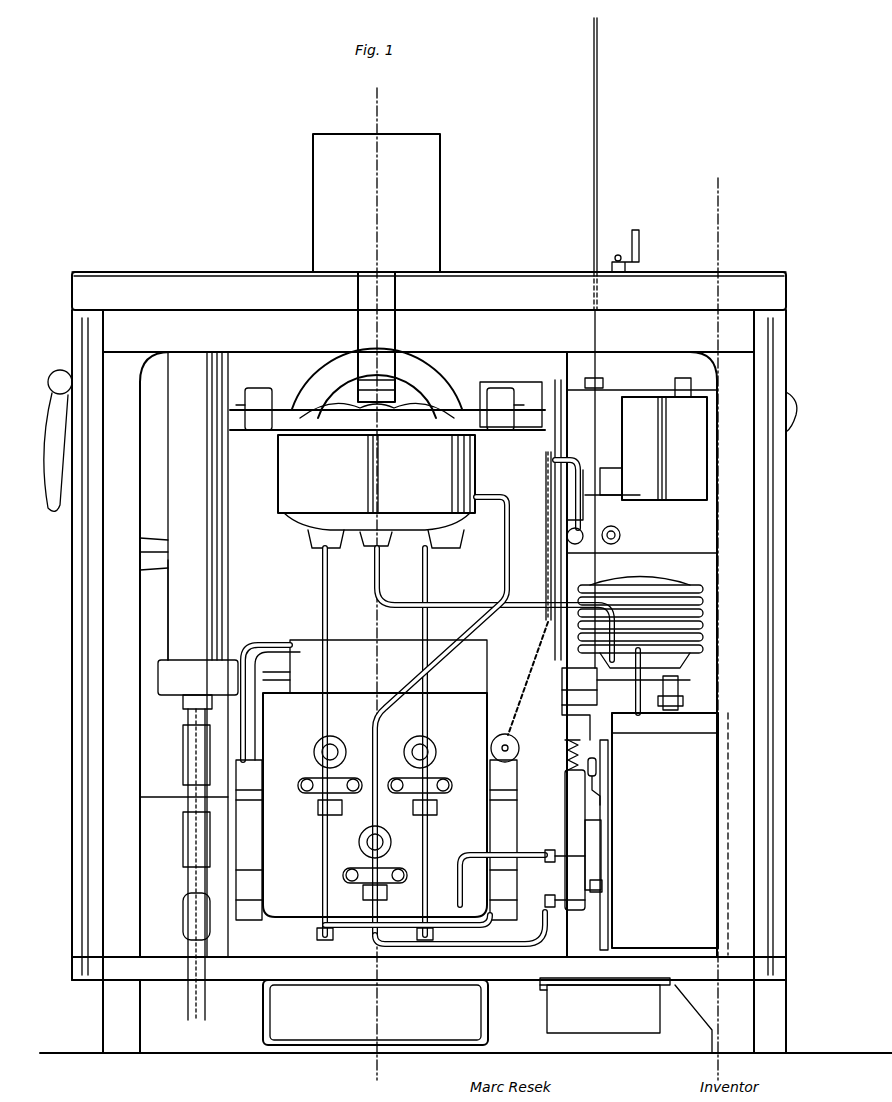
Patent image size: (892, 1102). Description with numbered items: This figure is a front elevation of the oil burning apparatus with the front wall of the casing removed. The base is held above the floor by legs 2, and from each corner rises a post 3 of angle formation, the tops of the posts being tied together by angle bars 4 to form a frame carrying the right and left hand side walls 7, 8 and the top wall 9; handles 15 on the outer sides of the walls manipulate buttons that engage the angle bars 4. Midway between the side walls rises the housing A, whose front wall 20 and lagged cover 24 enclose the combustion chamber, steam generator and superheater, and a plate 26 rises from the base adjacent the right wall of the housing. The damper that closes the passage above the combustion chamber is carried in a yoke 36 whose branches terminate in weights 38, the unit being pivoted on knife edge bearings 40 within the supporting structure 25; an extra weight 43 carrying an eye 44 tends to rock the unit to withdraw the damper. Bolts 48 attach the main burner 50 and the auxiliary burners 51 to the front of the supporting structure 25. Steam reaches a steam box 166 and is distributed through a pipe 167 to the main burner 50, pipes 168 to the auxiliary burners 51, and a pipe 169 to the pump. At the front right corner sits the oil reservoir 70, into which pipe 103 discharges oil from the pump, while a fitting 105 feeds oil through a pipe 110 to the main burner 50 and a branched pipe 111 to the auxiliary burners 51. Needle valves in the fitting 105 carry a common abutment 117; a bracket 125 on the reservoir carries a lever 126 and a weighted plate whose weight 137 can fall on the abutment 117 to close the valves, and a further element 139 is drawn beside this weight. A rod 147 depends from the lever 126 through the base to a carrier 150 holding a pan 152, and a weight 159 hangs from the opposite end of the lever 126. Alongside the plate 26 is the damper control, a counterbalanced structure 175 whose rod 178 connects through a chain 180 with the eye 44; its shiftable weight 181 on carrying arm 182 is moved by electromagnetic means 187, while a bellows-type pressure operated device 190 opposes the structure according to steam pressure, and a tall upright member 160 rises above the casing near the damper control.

The legs 2 is at (103, 1016).
The post 3 is at (700, 200).
The angle bars 4 is at (392, 112).
The right hand side wall 7 is at (777, 567).
The left hand side wall 8 is at (75, 565).
The top wall 9 is at (514, 282).
The handles 15 is at (54, 432).
The front wall 20 is at (199, 686).
The housing A is at (242, 549).
The lagged top wall or cover 24 is at (530, 388).
The supporting structure 25 is at (355, 700).
The plate 26 is at (557, 380).
The yoke 36 is at (258, 635).
The weights 38 is at (500, 823).
The knife edge bearings 40 is at (260, 790).
The extra weight 43 is at (511, 740).
The connecting means 44 is at (500, 740).
The fastening means or bolts 48 is at (364, 778).
The main burner 50 is at (380, 838).
The auxiliary burners 51 is at (322, 745).
The oil reservoir 70 is at (665, 830).
The pipe 103 is at (680, 683).
The fitting 105 is at (604, 866).
The pipe 110 is at (460, 948).
The branched pipe 111 is at (327, 848).
The common abutment 117 is at (590, 746).
The bracket 125 is at (600, 768).
The lever 126 is at (600, 784).
The weight 137 is at (626, 686).
The conduit 139 is at (595, 716).
The rod 147 is at (609, 923).
The carrier 150 is at (540, 990).
The pan 152 is at (487, 1015).
The weight 159 is at (602, 828).
The rod 160 is at (598, 175).
The steam box 166 is at (387, 410).
The pipe 167 is at (504, 555).
The pipes 168 is at (322, 557).
The pipe 169 is at (374, 557).
The counterbalanced structure 175 is at (622, 535).
The rod 178 is at (554, 455).
The chain 180 is at (545, 490).
The shiftable weight 181 is at (660, 424).
The carrying arm 182 is at (624, 498).
The electromagnetic means 187 is at (690, 445).
The pressure operated device 190 is at (668, 592).